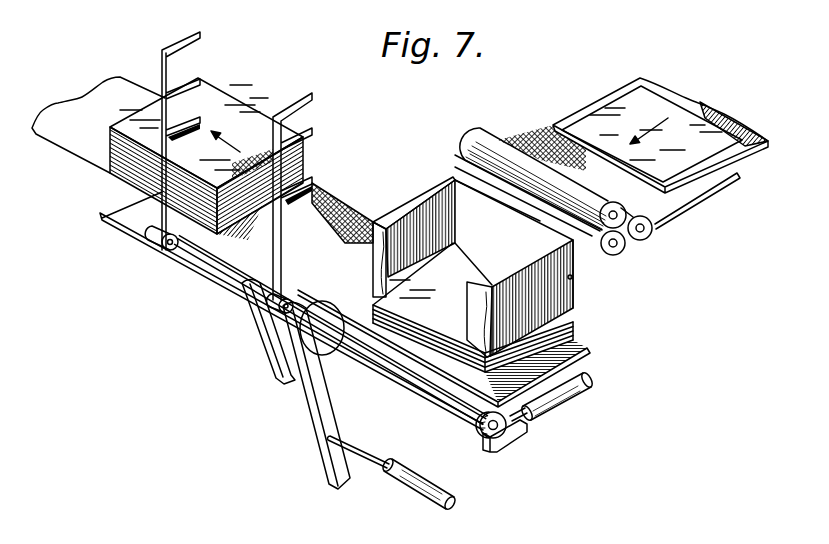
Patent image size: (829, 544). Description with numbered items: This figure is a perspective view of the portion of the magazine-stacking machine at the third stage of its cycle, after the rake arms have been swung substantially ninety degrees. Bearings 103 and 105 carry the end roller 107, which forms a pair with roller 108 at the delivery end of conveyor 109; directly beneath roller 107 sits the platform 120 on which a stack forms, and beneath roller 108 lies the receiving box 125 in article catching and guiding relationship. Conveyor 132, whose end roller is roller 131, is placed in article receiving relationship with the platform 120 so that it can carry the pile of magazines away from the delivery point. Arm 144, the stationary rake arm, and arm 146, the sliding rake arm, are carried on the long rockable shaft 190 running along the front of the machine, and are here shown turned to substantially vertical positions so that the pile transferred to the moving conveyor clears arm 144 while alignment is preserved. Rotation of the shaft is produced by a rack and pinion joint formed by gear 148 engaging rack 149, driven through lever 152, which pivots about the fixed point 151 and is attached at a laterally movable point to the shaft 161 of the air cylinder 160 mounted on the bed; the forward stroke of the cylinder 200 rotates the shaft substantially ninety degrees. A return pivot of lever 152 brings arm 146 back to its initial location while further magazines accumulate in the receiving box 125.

The bearing 103 is at (168, 247).
The bearing 105 is at (288, 296).
The roller 107 is at (622, 252).
The roller 108 is at (477, 141).
The conveyor 109 is at (690, 199).
The platform 120 is at (582, 351).
The receiving box 125 is at (574, 290).
The roller 131 is at (321, 355).
The conveyor 132 is at (352, 210).
The arm 144 is at (200, 38).
The arm 146 is at (296, 95).
The gear 148 is at (480, 431).
The rack 149 is at (507, 438).
The pivot point 151 is at (329, 485).
The lever 152 is at (276, 370).
The air cylinder 160 is at (408, 487).
The shaft 161 is at (374, 466).
The shaft 190 is at (398, 374).
The actuating cylinder 200 is at (577, 402).